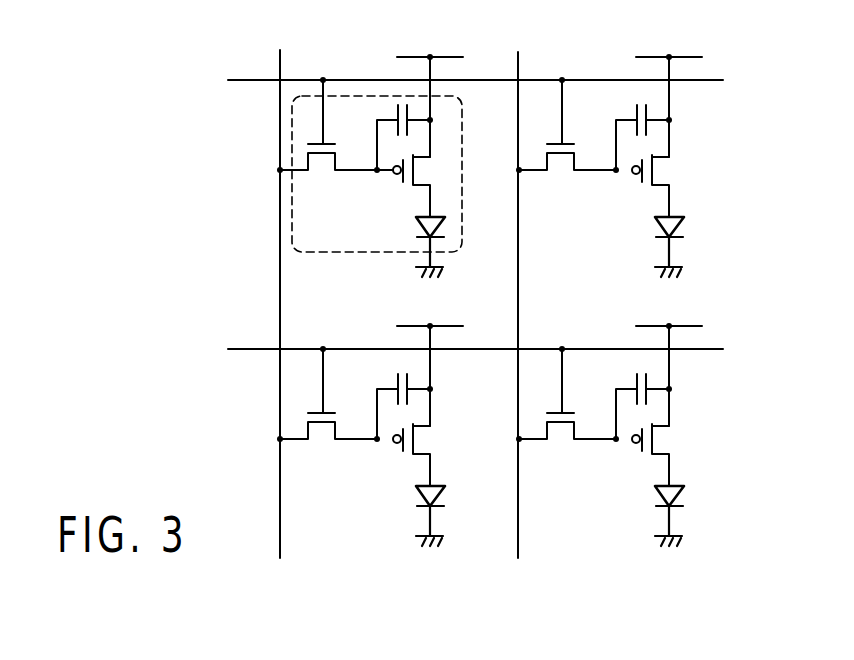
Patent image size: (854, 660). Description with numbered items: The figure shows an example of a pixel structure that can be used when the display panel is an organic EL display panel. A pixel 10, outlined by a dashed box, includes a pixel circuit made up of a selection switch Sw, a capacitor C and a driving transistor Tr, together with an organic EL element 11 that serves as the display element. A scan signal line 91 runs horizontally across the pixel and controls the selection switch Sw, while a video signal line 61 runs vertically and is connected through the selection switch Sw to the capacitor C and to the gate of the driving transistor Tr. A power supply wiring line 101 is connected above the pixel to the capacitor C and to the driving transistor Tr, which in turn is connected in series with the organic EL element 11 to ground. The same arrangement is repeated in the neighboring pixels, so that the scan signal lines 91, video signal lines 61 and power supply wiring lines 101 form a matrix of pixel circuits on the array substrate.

The video signal line 61 is at (280, 62).
The scan signal line 91 is at (240, 82).
The power supply wiring line 101 is at (447, 56).
The pixel 10 is at (345, 254).
The selection switch Sw is at (328, 152).
The capacitor C is at (397, 112).
The driving transistor Tr is at (427, 172).
The organic EL element 11 is at (447, 236).